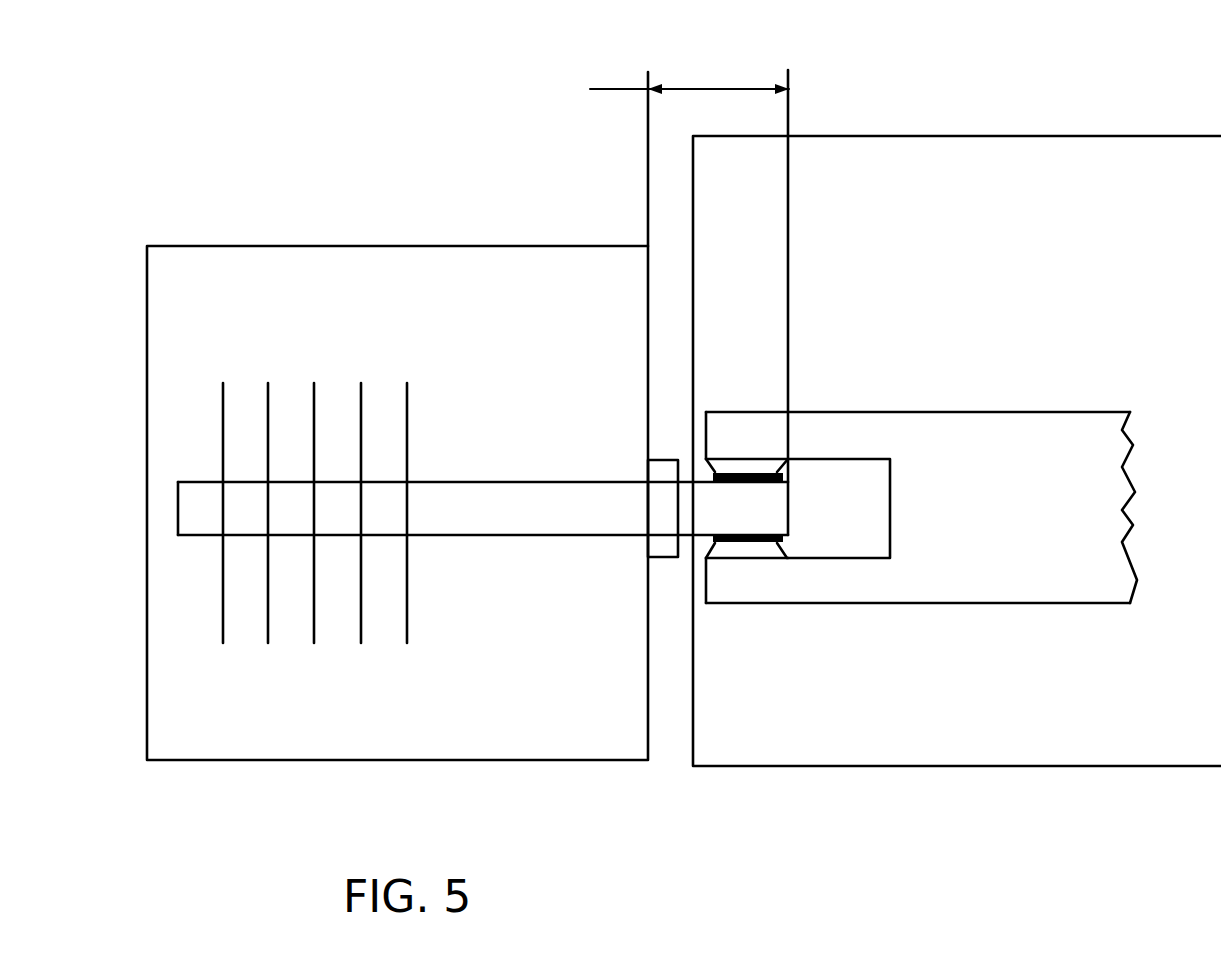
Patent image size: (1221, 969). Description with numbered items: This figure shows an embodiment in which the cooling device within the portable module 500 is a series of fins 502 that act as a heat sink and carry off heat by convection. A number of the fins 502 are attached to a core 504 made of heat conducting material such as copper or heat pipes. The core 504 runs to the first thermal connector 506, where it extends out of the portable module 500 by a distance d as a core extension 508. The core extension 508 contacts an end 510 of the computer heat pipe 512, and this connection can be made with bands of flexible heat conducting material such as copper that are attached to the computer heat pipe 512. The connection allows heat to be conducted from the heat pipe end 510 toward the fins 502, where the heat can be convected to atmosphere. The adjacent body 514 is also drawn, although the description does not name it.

The portable module 500 is at (190, 754).
The fins 502 is at (270, 372).
The core 504 is at (479, 545).
The first thermal connector 506 is at (663, 570).
The core extension 508 is at (788, 512).
The end of the computer heat pipe 510 is at (727, 612).
The computer heat pipe 512 is at (998, 417).
The second housing 514 is at (1205, 761).